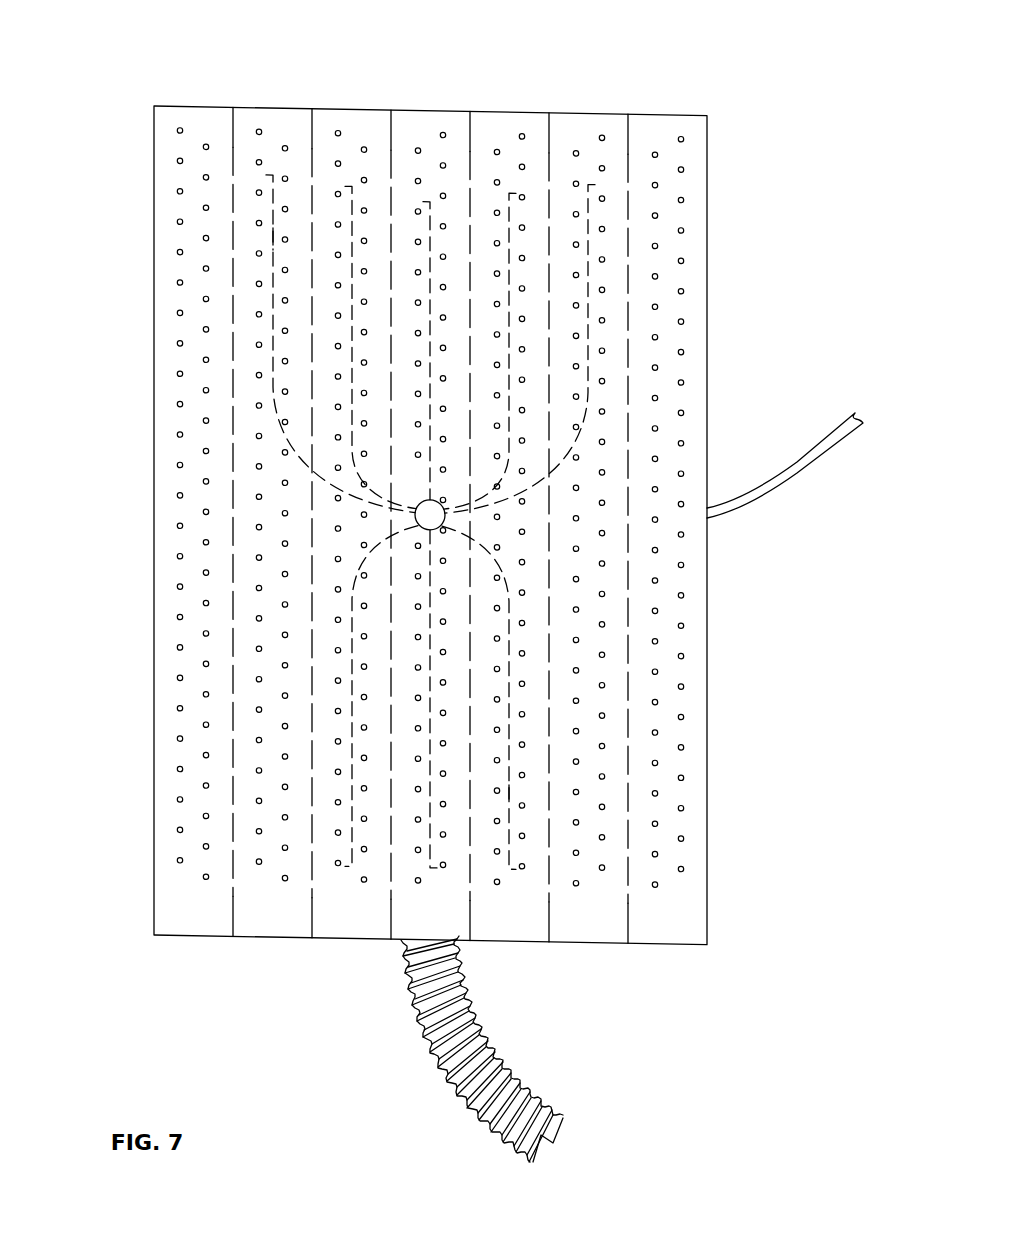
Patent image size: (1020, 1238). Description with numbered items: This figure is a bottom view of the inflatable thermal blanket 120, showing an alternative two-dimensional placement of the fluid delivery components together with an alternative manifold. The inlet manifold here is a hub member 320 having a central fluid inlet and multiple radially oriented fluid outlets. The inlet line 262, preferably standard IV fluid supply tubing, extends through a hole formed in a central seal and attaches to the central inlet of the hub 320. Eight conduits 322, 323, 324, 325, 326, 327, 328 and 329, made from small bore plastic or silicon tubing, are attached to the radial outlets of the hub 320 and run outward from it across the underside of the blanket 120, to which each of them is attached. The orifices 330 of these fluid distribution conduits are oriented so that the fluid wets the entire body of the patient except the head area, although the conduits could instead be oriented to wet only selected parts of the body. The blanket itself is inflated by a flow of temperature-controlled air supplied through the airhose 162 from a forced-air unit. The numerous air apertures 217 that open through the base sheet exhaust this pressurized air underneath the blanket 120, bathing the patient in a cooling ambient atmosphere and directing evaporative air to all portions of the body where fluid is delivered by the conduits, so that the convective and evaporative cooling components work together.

The inflatable thermal blanket 120 is at (144, 68).
The airhose 162 is at (477, 1117).
The apertures 217 is at (205, 330).
The inlet line 262 is at (801, 462).
The hub member 320 is at (440, 518).
The conduit 322 is at (273, 177).
The conduit 323 is at (352, 187).
The conduit 324 is at (430, 202).
The conduit 325 is at (509, 193).
The conduit 326 is at (588, 188).
The conduit 327 is at (350, 868).
The conduit 328 is at (437, 868).
The conduit 329 is at (515, 868).
The orifices 330 is at (272, 238).